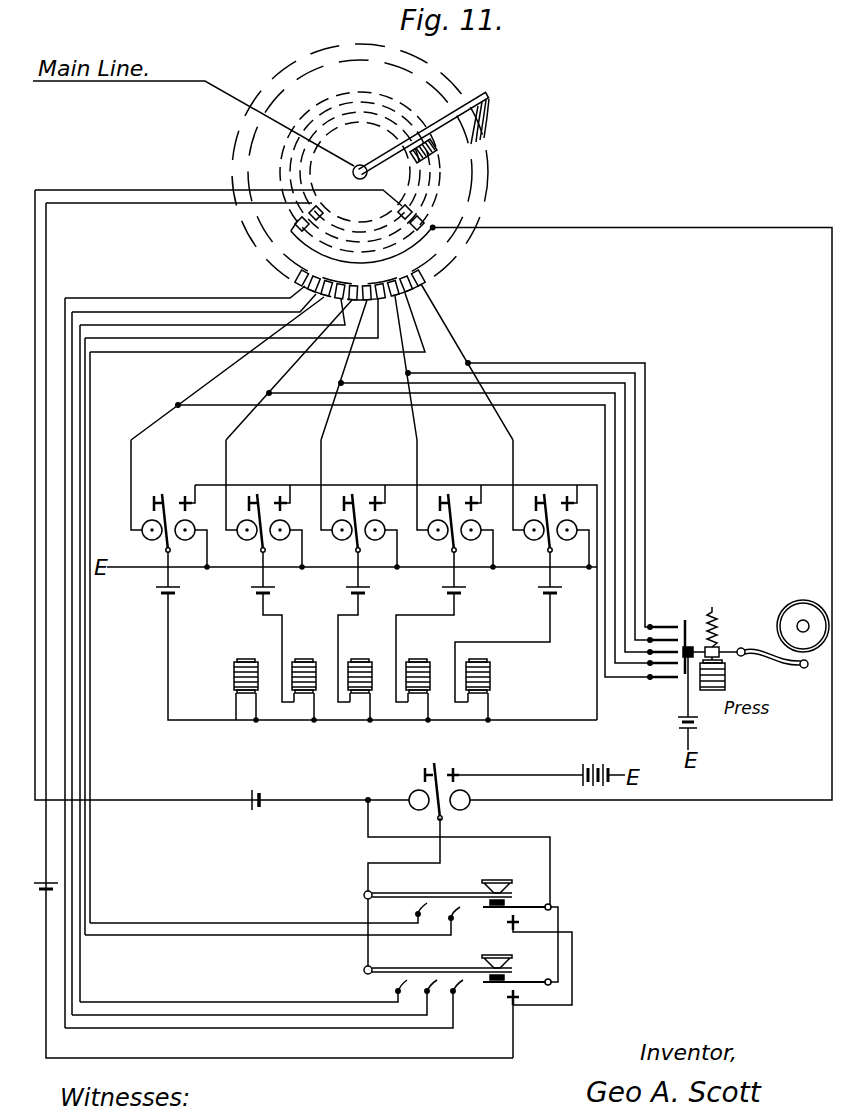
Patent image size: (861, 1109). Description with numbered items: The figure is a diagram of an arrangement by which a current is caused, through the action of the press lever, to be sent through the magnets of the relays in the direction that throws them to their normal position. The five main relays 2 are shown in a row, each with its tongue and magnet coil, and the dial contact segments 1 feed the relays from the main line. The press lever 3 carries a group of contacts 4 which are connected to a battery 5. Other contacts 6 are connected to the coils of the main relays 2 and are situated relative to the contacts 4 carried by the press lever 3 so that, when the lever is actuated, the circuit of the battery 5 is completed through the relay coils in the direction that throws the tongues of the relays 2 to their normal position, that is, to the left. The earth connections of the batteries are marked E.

The dial contact segments 1 is at (361, 288).
The main relays 2 is at (352, 581).
The press lever 3 is at (752, 656).
The group of contacts 4 is at (686, 620).
The battery 5 is at (686, 703).
The other contacts 6 is at (651, 626).